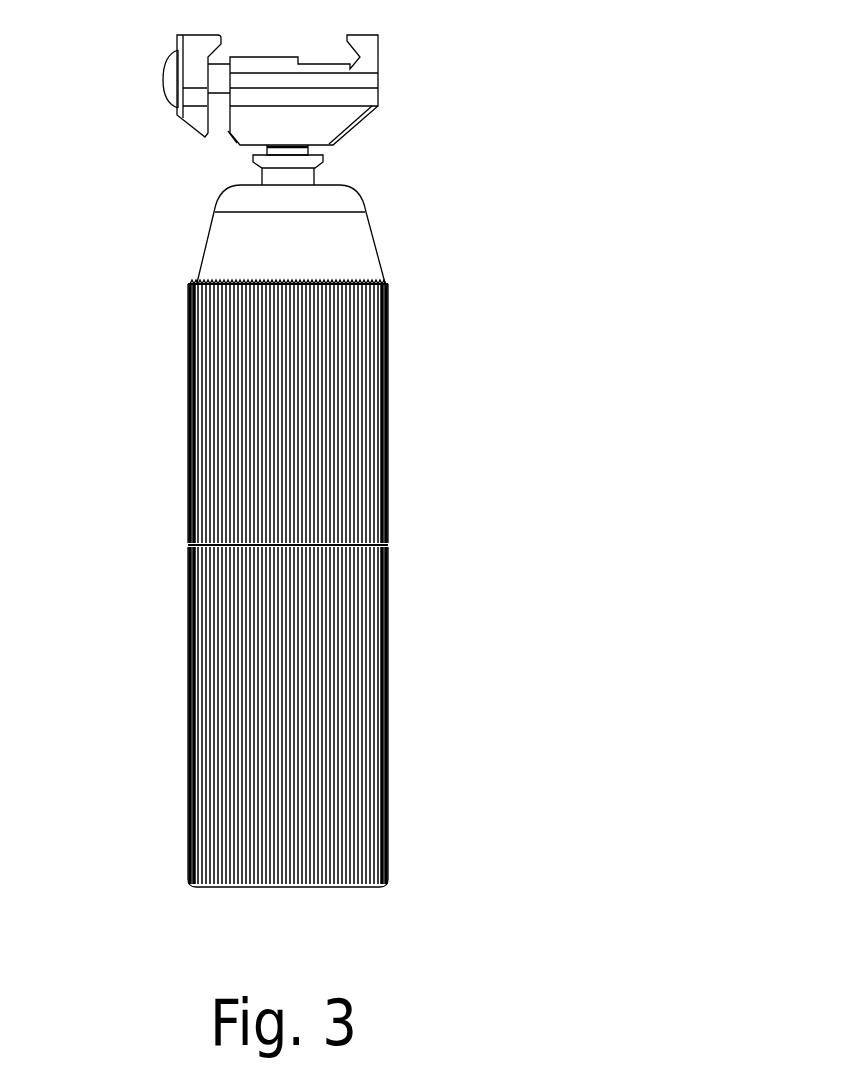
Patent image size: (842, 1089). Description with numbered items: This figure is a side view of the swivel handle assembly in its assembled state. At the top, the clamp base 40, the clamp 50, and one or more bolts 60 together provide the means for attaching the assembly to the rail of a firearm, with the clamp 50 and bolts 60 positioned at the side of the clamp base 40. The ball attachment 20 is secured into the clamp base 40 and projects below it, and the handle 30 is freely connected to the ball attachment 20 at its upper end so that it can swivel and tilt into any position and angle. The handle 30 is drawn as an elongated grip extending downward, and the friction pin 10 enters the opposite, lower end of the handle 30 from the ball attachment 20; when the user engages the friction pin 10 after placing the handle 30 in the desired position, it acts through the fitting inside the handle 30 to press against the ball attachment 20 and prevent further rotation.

The friction pin 10 is at (388, 705).
The ball attachment 20 is at (303, 178).
The handle 30 is at (388, 427).
The clamp base 40 is at (372, 72).
The clamp 50 is at (183, 43).
The bolt 60 is at (162, 92).